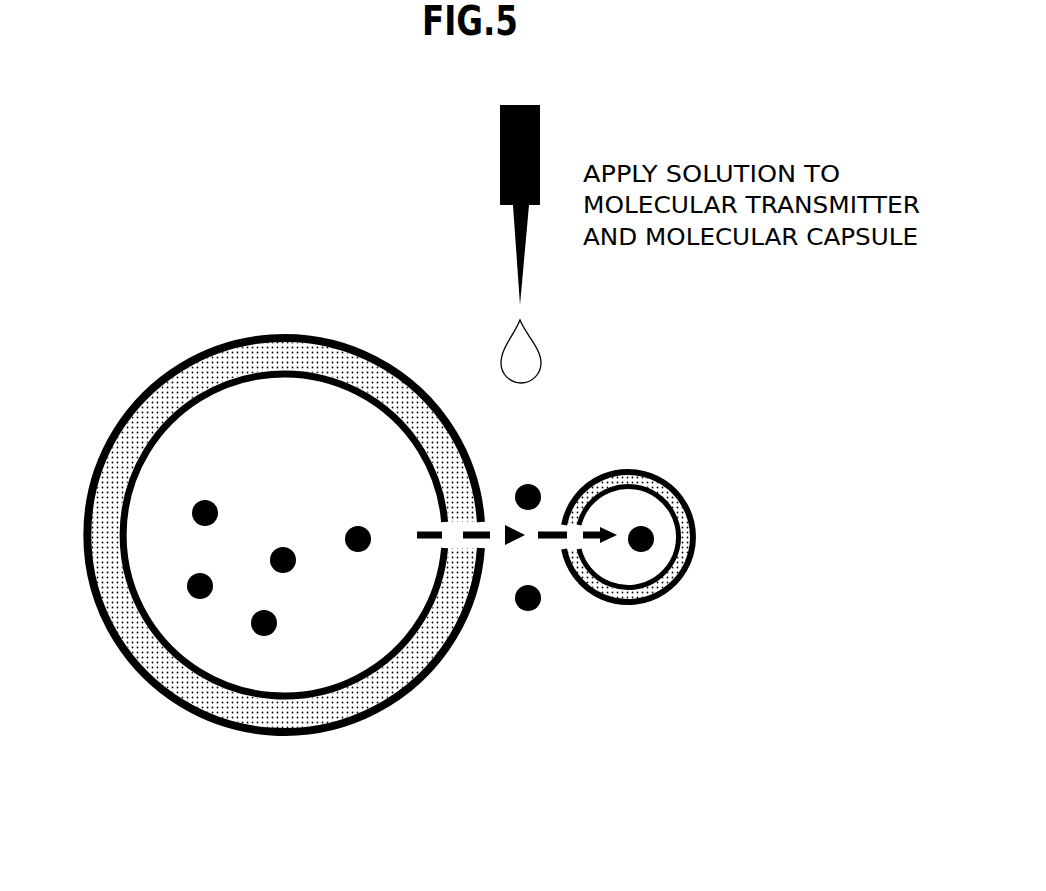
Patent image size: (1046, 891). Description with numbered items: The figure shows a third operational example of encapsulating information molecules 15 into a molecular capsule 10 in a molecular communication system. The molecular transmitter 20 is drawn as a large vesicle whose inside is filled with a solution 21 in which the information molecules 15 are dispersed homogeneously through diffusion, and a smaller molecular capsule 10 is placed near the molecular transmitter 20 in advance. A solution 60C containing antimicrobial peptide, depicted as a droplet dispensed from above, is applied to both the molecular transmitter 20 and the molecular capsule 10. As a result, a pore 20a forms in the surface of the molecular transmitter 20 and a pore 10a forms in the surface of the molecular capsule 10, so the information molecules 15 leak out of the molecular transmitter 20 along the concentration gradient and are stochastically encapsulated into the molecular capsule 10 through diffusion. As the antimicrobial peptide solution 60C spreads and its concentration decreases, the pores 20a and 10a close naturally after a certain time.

The molecular capsule 10 is at (653, 472).
The pore 10a is at (555, 543).
The information molecules 15 is at (205, 499).
The molecular transmitter 20 is at (170, 380).
The pore 20a is at (493, 540).
The solution 21 is at (185, 613).
The solution containing antimicrobial peptide 60C is at (525, 362).